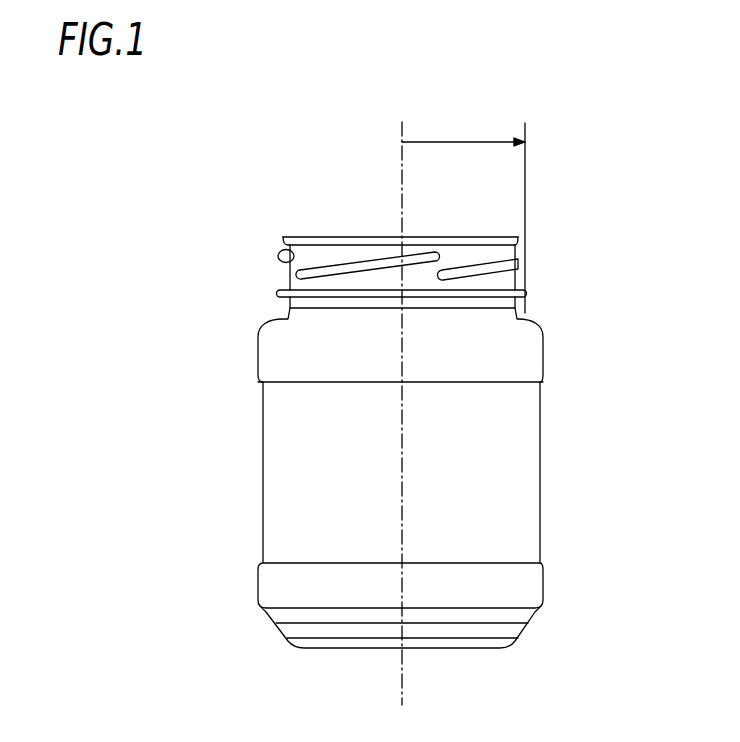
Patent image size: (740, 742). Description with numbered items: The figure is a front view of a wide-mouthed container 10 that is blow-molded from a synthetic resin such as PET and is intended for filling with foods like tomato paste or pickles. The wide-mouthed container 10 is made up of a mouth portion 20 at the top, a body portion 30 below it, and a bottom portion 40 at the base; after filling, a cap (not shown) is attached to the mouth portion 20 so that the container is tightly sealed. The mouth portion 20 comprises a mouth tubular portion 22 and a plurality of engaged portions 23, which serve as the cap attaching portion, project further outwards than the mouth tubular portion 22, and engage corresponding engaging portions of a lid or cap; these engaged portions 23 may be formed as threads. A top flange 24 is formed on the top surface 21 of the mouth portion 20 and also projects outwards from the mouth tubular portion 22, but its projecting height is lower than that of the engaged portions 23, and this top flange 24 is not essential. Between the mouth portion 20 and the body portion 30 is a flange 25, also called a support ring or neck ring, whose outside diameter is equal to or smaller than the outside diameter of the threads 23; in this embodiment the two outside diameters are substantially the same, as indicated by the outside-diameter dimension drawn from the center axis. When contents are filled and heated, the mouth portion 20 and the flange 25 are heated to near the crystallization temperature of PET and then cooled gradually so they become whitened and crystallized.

The wide-mouthed container 10 is at (588, 142).
The mouth portion 20 is at (258, 303).
The top surface 21 is at (472, 245).
The mouth tubular portion 22 is at (360, 256).
The engaged portions (cap attaching portion) 23 is at (520, 265).
The top flange 24 is at (520, 242).
The flange 25 is at (527, 293).
The body portion 30 is at (525, 462).
The bottom portion 40 is at (433, 652).